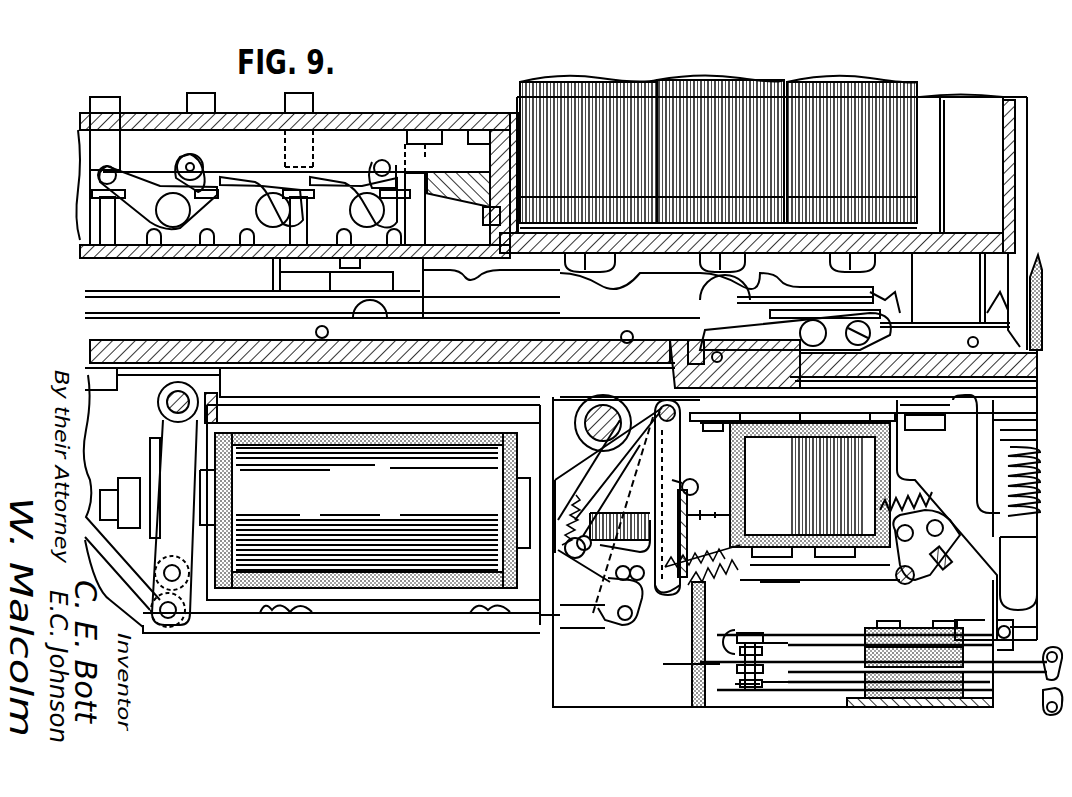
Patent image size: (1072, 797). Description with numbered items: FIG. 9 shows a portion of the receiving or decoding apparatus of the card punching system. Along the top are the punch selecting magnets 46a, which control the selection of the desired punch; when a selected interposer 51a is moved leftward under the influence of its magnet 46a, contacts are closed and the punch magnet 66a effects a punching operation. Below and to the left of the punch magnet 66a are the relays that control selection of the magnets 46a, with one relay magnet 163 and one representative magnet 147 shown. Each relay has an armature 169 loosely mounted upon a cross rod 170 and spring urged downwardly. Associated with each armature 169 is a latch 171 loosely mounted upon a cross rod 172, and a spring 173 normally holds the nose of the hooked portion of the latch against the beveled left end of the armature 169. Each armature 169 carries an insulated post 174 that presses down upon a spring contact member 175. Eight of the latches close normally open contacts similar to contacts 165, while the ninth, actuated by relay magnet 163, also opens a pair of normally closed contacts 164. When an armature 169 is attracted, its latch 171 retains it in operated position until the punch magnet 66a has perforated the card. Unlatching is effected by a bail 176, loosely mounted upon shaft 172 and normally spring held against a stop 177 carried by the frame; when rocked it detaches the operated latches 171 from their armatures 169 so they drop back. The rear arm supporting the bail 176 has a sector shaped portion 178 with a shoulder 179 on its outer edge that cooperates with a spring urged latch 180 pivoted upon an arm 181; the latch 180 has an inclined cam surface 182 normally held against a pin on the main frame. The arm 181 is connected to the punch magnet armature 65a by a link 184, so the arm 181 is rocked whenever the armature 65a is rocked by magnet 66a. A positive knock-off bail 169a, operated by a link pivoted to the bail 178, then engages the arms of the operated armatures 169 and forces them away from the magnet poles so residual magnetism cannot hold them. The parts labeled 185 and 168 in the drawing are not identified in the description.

The punch selecting magnet 46a is at (820, 98).
The interposer 51a is at (362, 145).
The punch magnet armature 65a is at (170, 432).
The punch magnet 66a is at (385, 450).
The link 184 is at (368, 613).
The cross rod 172 is at (660, 405).
The sector shaped portion 178 is at (635, 462).
The spring 185 is at (583, 510).
The shoulder 179 is at (612, 512).
The latch 180 is at (625, 560).
The inclined cam surface 182 is at (600, 560).
The arm 181 is at (600, 615).
The latch 171 is at (668, 592).
The insulated post 174 is at (692, 620).
The stop 177 is at (696, 485).
The rod 168 is at (722, 513).
The bail 176 is at (720, 553).
The spring 173 is at (700, 568).
The relay magnet 163 is at (795, 496).
The relay magnet 147 is at (880, 455).
The knock-off bail 169a is at (935, 565).
The cross rod 170 is at (908, 585).
The armature 169 is at (865, 582).
The contacts 165 is at (733, 640).
The spring contact member 175 is at (665, 664).
The contacts 164 is at (735, 682).